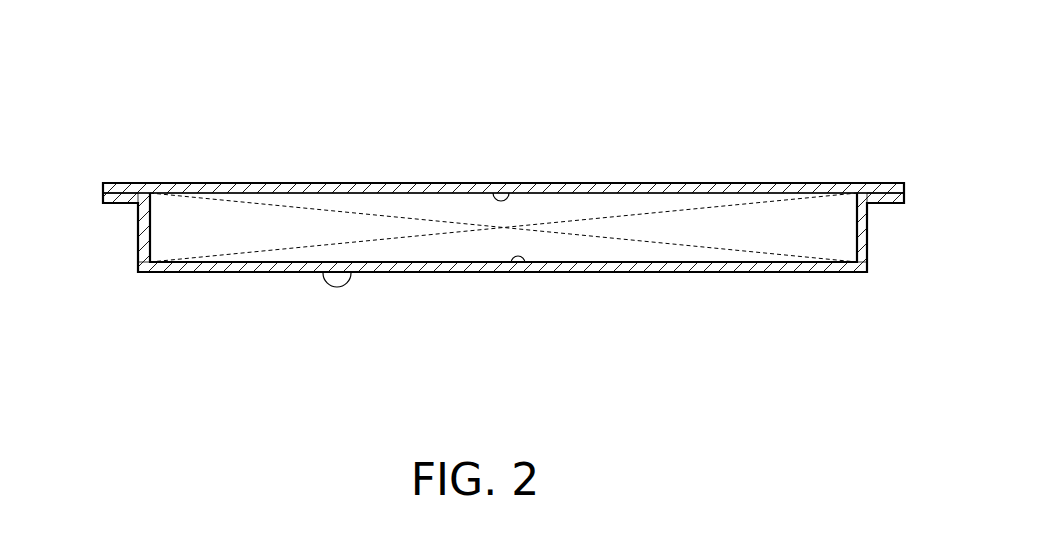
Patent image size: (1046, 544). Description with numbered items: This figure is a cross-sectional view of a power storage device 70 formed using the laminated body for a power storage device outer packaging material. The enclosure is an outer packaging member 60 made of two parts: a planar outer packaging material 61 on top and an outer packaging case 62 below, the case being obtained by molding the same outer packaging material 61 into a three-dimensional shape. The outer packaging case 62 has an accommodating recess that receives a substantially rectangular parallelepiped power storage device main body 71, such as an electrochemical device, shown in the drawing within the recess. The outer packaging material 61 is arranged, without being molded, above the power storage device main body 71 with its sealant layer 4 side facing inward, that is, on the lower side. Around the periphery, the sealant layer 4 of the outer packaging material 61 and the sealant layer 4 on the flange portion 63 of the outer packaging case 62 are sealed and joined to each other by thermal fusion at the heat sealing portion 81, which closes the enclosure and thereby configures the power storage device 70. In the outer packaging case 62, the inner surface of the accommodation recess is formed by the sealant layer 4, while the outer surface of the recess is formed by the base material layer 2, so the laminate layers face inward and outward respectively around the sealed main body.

The power storage device 70 is at (745, 93).
The outer packaging member 60 is at (315, 92).
The outer packaging material 61 is at (412, 183).
The outer packaging case 62 is at (320, 265).
The sealant layer 4 is at (508, 195).
The base material layer 2 is at (615, 183).
The heat sealing portion 81 is at (126, 196).
The flange portion 63 is at (113, 203).
The power storage device main body 71 is at (627, 228).